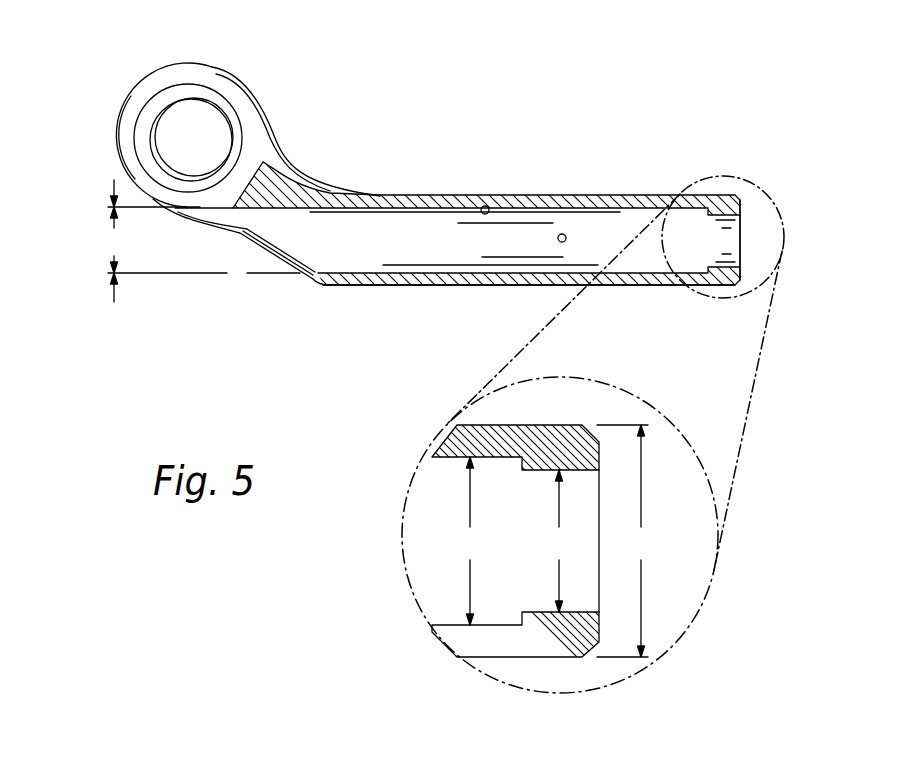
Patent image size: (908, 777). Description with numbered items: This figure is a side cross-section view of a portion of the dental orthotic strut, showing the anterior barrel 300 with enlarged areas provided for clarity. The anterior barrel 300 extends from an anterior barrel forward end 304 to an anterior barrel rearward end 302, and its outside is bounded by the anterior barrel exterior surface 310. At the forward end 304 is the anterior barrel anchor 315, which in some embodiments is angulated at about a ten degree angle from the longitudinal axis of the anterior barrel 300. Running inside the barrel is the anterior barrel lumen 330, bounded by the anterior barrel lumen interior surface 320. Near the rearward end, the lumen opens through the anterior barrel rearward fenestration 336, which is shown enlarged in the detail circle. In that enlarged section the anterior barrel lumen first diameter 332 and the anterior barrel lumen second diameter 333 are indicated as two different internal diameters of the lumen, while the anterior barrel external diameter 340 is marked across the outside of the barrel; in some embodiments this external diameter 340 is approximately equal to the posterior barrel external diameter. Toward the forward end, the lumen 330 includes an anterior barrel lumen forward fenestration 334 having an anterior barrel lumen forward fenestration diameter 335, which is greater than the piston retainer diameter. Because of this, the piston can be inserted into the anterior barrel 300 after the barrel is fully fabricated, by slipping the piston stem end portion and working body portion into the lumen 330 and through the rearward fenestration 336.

The anterior barrel 300 is at (434, 173).
The anterior barrel rearward end 302 is at (773, 187).
The anterior barrel forward end 304 is at (254, 67).
The anterior barrel exterior surface 310 is at (380, 286).
The anterior barrel anchor 315 is at (222, 111).
The anterior barrel lumen interior surface 320 is at (487, 210).
The anterior barrel lumen 330 is at (563, 237).
The anterior barrel lumen first diameter 332 is at (468, 541).
The anterior barrel lumen second diameter 333 is at (556, 541).
The anterior barrel lumen forward fenestration 334 is at (260, 252).
The anterior barrel lumen forward fenestration diameter 335 is at (196, 241).
The anterior barrel rearward fenestration 336 is at (755, 230).
The anterior barrel external diameter 340 is at (629, 541).